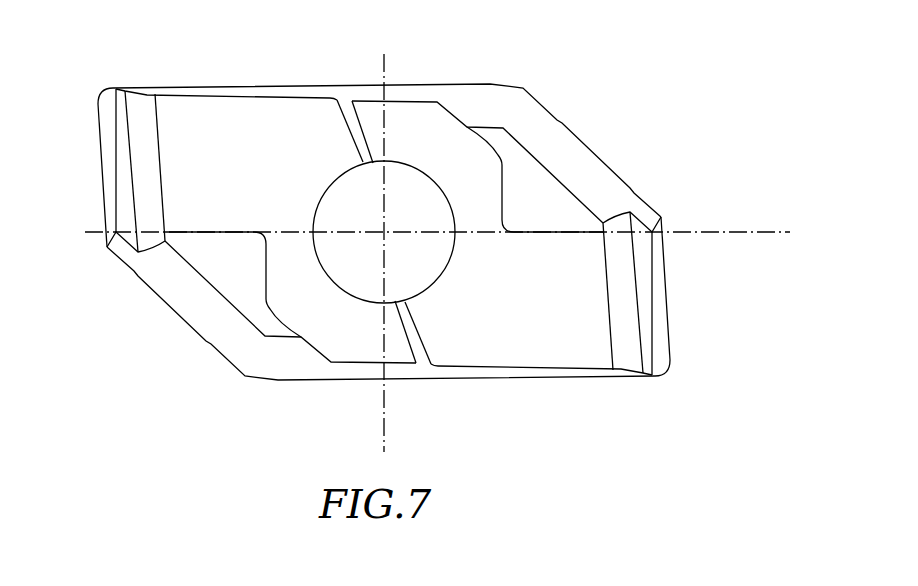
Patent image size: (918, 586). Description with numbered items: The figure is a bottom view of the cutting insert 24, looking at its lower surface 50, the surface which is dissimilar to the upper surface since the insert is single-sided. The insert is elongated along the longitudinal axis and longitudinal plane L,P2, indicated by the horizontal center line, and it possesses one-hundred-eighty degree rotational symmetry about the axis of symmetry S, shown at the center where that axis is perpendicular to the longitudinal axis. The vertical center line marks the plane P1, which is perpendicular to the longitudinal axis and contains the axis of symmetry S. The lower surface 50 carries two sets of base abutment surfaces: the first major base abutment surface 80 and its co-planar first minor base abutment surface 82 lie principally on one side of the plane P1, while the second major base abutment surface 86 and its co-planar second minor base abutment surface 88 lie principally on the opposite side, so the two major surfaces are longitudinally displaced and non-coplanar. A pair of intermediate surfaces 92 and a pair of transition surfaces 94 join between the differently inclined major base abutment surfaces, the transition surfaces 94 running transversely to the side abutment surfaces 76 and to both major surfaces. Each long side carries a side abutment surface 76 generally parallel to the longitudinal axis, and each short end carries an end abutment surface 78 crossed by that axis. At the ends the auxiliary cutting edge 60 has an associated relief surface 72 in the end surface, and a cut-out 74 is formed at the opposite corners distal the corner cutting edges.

The cutting insert 24 is at (173, 370).
The lower surface 50 is at (169, 94).
The auxiliary cutting edge 60 is at (667, 273).
The relief surface 72 is at (660, 322).
The cut-out 74 is at (570, 125).
The side abutment surface 76 is at (417, 86).
The end abutment surface 78 is at (625, 345).
The first major base abutment surface 80 is at (230, 122).
The first minor base abutment surface 82 is at (543, 205).
The second major base abutment surface 86 is at (532, 330).
The second minor base abutment surface 88 is at (220, 260).
The intermediate surface 92 is at (345, 115).
The transition surface 94 is at (345, 127).
The plane P1 is at (388, 241).
The longitudinal axis and longitudinal plane L,P2 is at (706, 224).
The axis of symmetry S is at (386, 230).